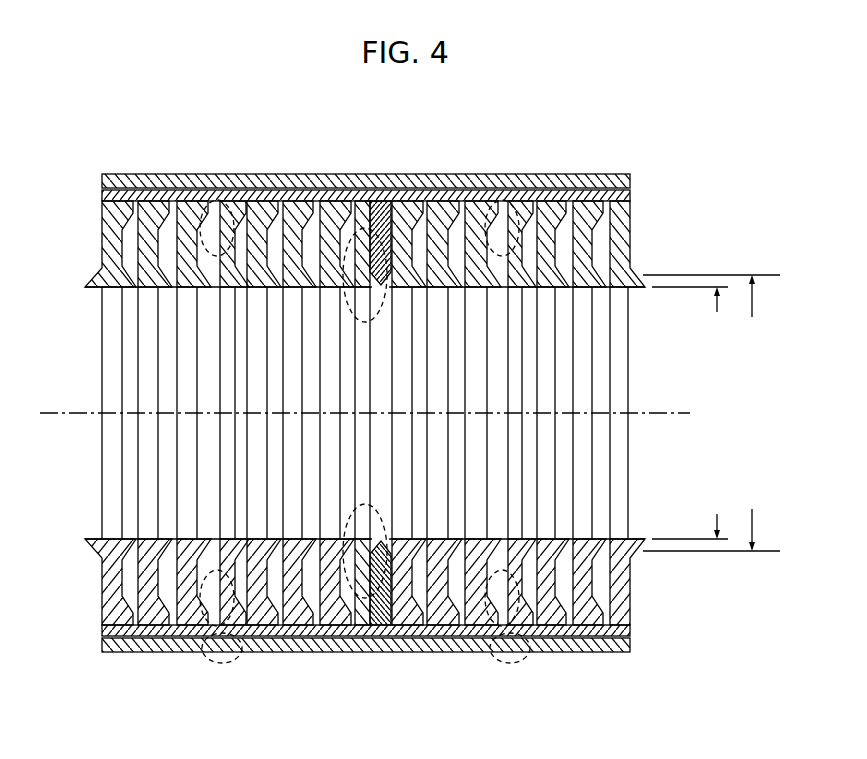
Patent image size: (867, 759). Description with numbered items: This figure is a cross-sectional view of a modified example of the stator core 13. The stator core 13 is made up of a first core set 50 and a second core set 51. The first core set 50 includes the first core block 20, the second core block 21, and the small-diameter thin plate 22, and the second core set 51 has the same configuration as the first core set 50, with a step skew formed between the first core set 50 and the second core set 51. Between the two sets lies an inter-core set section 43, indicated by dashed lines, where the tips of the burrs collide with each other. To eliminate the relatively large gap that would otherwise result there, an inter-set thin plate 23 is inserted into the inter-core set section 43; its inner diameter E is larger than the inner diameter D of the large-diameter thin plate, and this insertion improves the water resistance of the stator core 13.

The stator core 13 is at (664, 160).
The first core block 20 is at (215, 166).
The second core block 21 is at (345, 166).
The small-diameter thin plate 22 is at (213, 198).
The inter-set thin plate 23 is at (378, 200).
The inter-core set section 43 is at (356, 505).
The first core set 50 is at (345, 660).
The second core set 51 is at (390, 660).